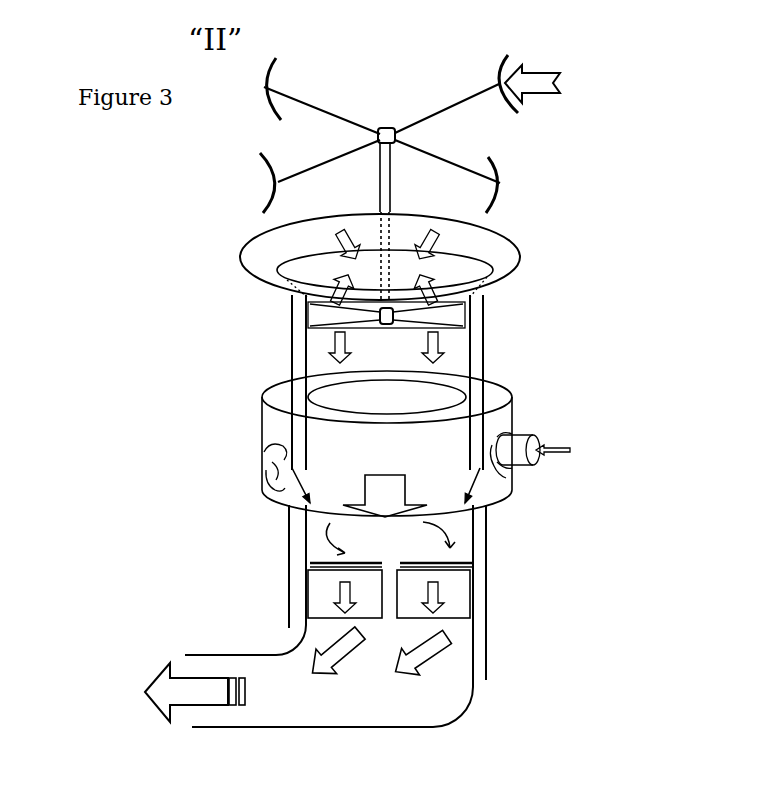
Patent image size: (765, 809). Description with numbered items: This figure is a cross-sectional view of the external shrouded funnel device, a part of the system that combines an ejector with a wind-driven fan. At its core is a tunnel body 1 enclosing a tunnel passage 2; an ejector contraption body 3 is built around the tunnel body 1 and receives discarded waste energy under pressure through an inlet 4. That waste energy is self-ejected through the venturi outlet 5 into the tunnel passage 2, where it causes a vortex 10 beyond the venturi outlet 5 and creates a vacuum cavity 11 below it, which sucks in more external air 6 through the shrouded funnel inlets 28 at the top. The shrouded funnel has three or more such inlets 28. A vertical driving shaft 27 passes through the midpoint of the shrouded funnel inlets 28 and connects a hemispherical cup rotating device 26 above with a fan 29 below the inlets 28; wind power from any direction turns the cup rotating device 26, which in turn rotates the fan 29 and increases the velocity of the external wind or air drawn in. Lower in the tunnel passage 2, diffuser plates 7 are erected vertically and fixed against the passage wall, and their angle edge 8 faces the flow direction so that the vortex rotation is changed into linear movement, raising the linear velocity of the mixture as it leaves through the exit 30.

The tunnel body 1 is at (290, 363).
The tunnel passage 2 is at (387, 397).
The ejector contraption body 3 is at (515, 415).
The inlet 4 is at (580, 450).
The venturi outlet 5 is at (280, 462).
The external air 6 is at (386, 347).
The diffuser plates 7 is at (320, 590).
The diffuser plates angle edge 8 is at (478, 564).
The vortex 10 is at (390, 538).
The vacuum cavity 11 is at (385, 477).
The hemispherical cup rotating device 26 is at (567, 83).
The vertical driving shaft 27 is at (397, 180).
The shrouded funnel inlets 28 is at (512, 257).
The fan 29 is at (448, 316).
The exit 30 is at (300, 671).